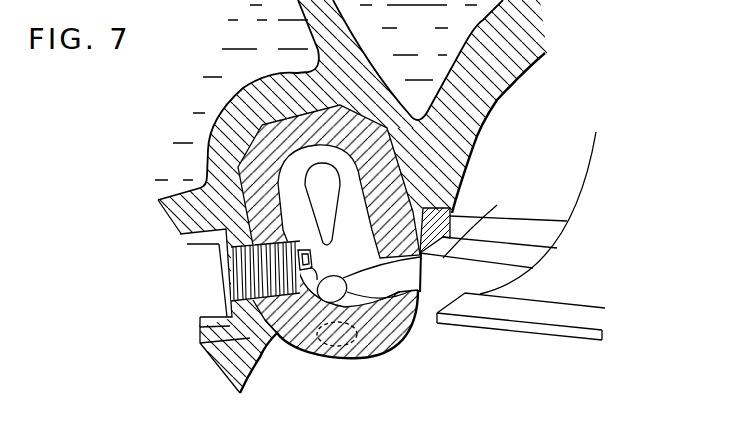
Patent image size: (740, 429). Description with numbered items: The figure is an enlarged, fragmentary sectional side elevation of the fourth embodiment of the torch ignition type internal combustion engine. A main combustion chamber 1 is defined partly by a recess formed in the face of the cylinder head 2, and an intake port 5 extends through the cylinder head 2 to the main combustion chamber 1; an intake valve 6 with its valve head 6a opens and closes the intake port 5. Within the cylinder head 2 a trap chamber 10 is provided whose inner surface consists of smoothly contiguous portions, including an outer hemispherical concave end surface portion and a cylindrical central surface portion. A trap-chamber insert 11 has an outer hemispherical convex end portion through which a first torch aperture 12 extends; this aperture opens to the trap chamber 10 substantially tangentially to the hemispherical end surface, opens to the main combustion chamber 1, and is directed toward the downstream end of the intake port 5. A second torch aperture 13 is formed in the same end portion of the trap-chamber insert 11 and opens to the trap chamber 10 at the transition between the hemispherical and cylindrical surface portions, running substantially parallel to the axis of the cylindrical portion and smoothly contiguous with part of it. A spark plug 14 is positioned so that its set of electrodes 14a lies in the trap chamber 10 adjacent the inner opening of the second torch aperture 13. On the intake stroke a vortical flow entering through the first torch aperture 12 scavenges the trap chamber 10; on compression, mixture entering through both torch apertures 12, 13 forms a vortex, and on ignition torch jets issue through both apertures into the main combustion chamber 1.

The main combustion chamber 1 is at (435, 381).
The cylinder head 2 is at (260, 90).
The intake port 5 is at (540, 153).
The intake valve 6 is at (577, 247).
The valve head 6a is at (513, 313).
The trap chamber 10 is at (330, 205).
The trap-chamber insert 11 is at (368, 347).
The first torch aperture 12 is at (418, 286).
The second torch aperture 13 is at (290, 336).
The spark plug 14 is at (210, 293).
The electrodes 14a is at (326, 282).